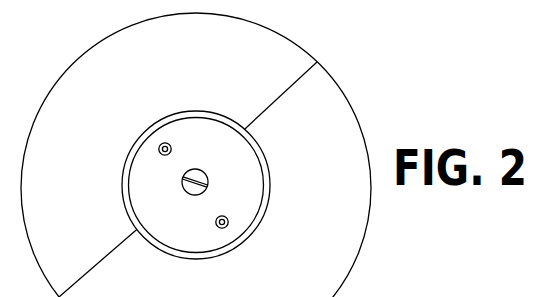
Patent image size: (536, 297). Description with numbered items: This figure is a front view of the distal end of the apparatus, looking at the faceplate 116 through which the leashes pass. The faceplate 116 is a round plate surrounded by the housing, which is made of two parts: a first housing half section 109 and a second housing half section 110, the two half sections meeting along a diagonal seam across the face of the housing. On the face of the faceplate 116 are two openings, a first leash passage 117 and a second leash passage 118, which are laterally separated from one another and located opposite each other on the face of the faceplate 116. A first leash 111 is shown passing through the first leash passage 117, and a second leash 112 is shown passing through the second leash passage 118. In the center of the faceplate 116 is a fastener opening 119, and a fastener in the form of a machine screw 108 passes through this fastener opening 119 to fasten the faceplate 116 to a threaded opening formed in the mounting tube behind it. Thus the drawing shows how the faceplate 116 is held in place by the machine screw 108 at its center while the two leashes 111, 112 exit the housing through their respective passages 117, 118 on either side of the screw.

The machine screw 108 is at (185, 212).
The first housing half section 109 is at (120, 136).
The second housing half section 110 is at (328, 138).
The first leash 111 is at (166, 156).
The second leash 112 is at (225, 228).
The faceplate 116 is at (177, 214).
The first leash passage 117 is at (172, 147).
The second leash passage 118 is at (228, 221).
The fastener opening 119 is at (208, 184).